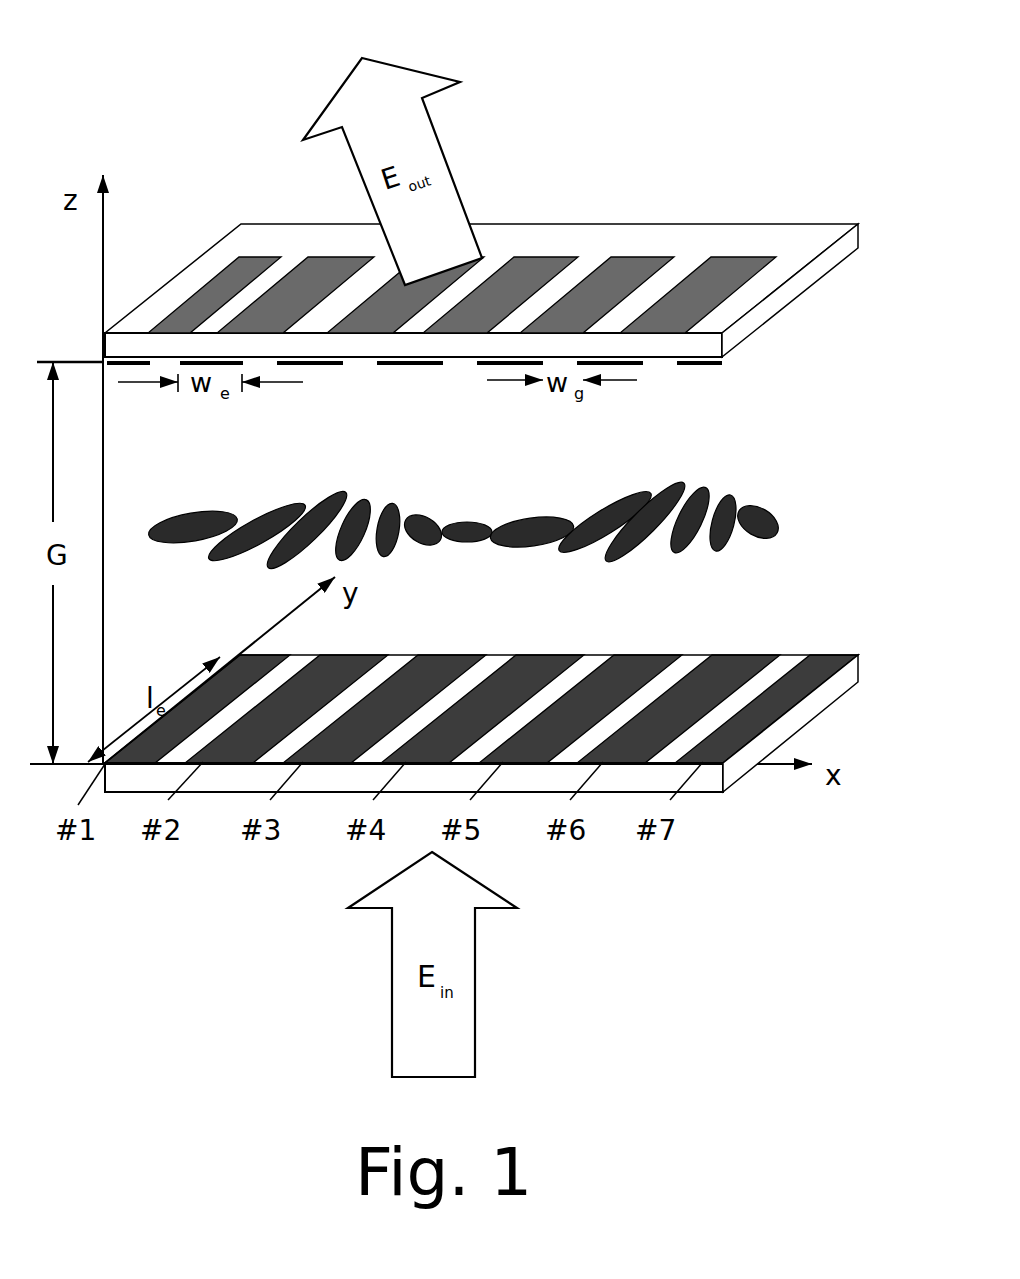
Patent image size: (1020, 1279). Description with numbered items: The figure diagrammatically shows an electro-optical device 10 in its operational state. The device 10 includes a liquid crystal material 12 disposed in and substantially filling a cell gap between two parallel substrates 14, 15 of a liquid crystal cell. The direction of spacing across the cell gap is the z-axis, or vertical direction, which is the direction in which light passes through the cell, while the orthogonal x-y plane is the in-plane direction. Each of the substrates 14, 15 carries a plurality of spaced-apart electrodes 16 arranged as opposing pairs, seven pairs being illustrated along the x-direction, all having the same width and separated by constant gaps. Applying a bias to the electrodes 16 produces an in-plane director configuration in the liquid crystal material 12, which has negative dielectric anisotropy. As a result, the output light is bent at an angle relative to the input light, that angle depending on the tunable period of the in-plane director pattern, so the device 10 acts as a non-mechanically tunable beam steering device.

The electro-optical device 10 is at (698, 123).
The liquid crystal material 12 is at (475, 487).
The substrate 14 is at (842, 232).
The substrate 15 is at (852, 680).
The electrodes 16 is at (493, 364).